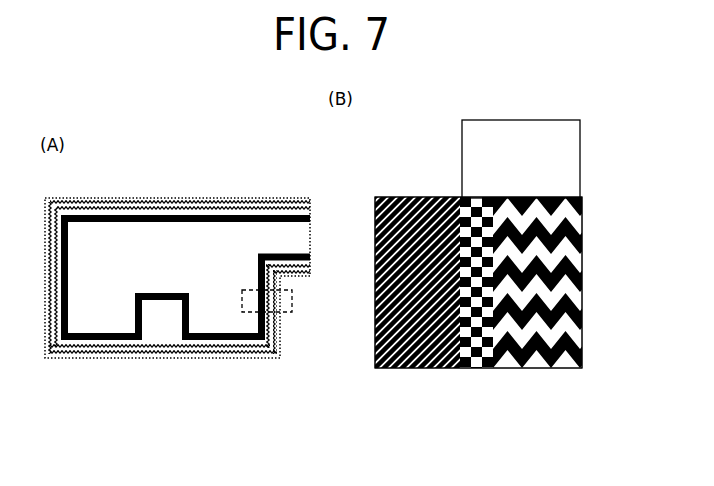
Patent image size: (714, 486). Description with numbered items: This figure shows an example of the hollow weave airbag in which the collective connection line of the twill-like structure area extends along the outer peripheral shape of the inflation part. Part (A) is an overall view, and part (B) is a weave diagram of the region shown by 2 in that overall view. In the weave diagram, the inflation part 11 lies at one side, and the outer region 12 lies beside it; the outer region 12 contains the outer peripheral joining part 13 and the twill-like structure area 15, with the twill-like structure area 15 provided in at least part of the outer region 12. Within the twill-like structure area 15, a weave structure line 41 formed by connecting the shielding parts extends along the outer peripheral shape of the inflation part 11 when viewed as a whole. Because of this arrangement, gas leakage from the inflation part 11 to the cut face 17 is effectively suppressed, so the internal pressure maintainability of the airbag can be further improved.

The region shown in the overall view 2 is at (292, 301).
The inflation part 11 is at (458, 198).
The outer region 12 is at (580, 198).
The outer peripheral joining part 13 is at (490, 198).
The twill-like structure area 15 is at (580, 198).
The cut face 17 is at (582, 335).
The weave structure line 41 is at (522, 368).